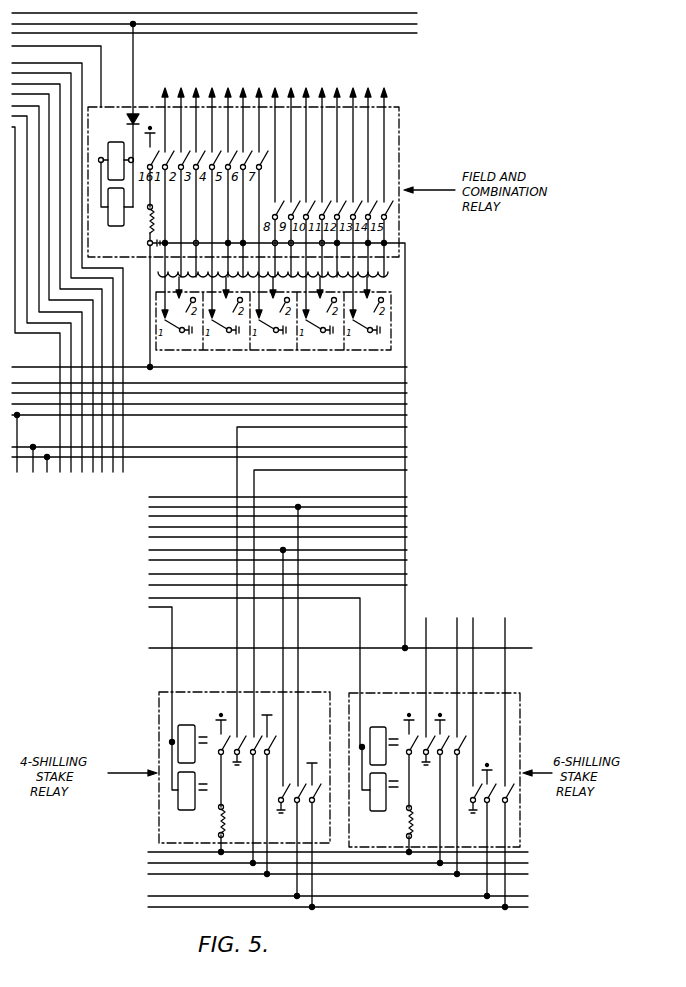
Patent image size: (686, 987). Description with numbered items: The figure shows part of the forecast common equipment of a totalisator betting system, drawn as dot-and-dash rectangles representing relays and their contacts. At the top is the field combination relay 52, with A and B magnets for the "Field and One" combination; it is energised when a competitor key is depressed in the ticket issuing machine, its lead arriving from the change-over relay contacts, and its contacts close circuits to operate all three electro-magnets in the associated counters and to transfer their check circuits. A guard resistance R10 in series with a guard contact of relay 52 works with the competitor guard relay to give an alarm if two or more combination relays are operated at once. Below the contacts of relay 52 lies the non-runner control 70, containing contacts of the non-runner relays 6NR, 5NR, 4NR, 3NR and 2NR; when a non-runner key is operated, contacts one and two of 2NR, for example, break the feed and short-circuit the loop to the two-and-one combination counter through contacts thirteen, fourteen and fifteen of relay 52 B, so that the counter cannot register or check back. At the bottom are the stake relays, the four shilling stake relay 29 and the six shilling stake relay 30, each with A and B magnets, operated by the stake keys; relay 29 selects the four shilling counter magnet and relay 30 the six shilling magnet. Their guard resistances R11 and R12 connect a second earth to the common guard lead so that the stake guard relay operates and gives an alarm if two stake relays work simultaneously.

The field combination relay 52 is at (119, 170).
The non-runner control 70 is at (273, 321).
The 4 shilling stake relay 29 is at (244, 799).
The 6 shilling stake relay 30 is at (434, 762).
The guard resistance R10 is at (157, 269).
The guard resistance R11 is at (233, 803).
The guard resistance R12 is at (421, 803).
The non-runner relay contacts 6NR is at (177, 313).
The non-runner relay contacts 5NR is at (224, 313).
The non-runner relay contacts 4NR is at (271, 313).
The non-runner relay contacts 3NR is at (318, 313).
The non-runner relay contacts 2NR is at (365, 313).